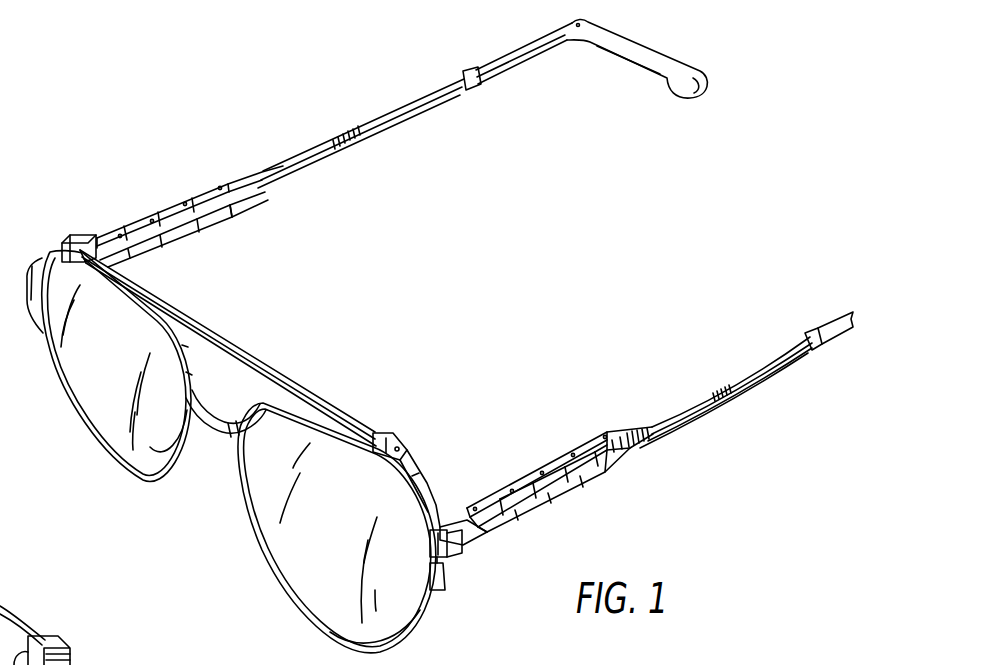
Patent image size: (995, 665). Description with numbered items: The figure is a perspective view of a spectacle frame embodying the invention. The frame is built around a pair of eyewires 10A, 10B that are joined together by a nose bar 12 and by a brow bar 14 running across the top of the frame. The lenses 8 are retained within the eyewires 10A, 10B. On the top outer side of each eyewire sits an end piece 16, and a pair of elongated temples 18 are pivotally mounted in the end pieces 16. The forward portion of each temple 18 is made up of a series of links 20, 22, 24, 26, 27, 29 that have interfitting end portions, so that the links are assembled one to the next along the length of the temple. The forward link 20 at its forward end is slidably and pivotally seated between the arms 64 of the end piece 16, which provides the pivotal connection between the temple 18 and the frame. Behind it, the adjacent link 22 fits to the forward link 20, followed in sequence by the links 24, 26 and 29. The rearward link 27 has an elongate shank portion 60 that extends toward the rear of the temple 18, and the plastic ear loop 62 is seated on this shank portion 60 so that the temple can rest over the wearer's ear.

The lenses 8 is at (103, 400).
The eyewire 10A is at (157, 480).
The eyewire 10B is at (262, 549).
The nose bar 12 is at (213, 434).
The brow bar 14 is at (281, 364).
The end piece 16 is at (443, 484).
The temple 18 is at (278, 160).
The forward link 20 is at (470, 537).
The link 22 is at (507, 533).
The link 24 is at (543, 500).
The link 26 is at (570, 473).
The rearward link 27 is at (633, 445).
The link 29 is at (598, 473).
The shank portion 60 is at (418, 90).
The ear loop 62 is at (680, 62).
The arms 64 is at (450, 510).